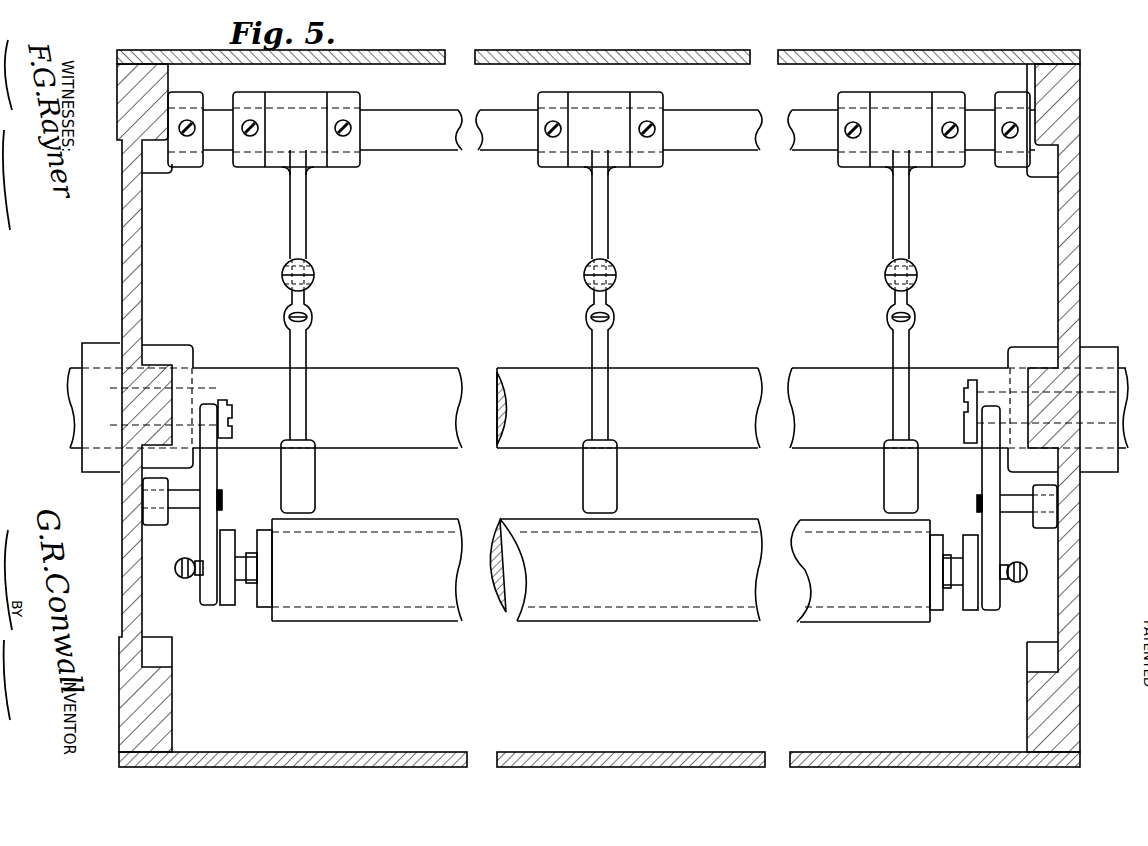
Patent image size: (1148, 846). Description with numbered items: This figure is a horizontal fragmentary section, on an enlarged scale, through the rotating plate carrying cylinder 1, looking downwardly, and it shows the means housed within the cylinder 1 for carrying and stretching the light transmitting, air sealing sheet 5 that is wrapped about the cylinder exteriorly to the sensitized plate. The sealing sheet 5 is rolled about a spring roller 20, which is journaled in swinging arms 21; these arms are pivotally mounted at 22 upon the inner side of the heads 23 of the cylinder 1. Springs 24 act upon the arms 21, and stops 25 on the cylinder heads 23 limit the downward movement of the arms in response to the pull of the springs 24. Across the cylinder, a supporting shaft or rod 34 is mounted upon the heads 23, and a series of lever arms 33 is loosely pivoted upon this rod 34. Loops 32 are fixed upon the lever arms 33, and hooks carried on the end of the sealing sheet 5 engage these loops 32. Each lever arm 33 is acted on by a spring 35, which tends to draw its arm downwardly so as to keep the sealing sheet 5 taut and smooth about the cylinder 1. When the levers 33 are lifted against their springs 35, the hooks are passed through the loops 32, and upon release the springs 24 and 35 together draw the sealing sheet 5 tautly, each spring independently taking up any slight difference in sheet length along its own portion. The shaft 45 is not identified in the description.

The rotatable cylinder 1 is at (572, 52).
The sealing sheet 5 is at (353, 613).
The spring roller 20 is at (508, 600).
The swinging arms 21 is at (988, 602).
The pivot 22 is at (940, 408).
The cylinder heads 23 is at (143, 258).
The springs 24 is at (1018, 583).
The stops 25 is at (975, 500).
The loops 32 is at (937, 325).
The lever arms 33 is at (935, 231).
The supporting shaft or rod 34 is at (720, 143).
The spring 35 is at (938, 282).
The shaft 45 is at (445, 368).